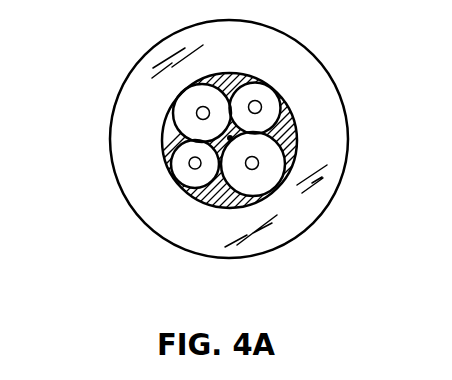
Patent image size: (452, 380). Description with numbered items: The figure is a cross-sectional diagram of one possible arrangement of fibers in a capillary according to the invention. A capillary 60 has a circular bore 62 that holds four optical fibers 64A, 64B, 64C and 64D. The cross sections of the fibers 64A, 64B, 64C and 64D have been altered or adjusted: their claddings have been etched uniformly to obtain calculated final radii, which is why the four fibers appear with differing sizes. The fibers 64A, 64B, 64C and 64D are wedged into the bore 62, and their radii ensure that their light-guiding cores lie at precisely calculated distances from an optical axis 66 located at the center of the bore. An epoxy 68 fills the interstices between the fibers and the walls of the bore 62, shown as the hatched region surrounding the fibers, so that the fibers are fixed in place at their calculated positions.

The capillary 60 is at (232, 169).
The circular bore 62 is at (200, 203).
The optical fiber 64A is at (186, 112).
The optical fiber 64B is at (270, 99).
The optical fiber 64C is at (265, 182).
The optical fiber 64D is at (180, 167).
The optical axis 66 is at (237, 74).
The epoxy 68 is at (293, 149).